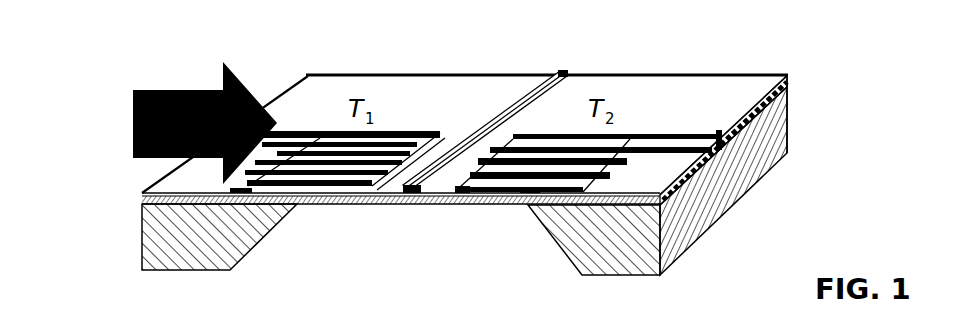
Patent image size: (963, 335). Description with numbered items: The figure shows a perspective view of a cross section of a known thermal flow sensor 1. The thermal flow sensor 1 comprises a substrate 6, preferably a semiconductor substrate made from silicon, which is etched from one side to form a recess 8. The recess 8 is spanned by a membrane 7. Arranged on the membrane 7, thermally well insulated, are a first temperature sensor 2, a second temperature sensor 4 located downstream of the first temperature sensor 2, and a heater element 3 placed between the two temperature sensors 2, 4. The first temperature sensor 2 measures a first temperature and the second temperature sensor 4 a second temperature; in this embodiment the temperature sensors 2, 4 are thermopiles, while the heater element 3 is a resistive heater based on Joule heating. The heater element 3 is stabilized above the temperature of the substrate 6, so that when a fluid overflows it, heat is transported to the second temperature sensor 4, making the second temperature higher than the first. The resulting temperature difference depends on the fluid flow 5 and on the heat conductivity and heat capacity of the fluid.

The thermal flow sensor 1 is at (803, 64).
The first temperature sensor 2 is at (325, 184).
The heater element 3 is at (403, 189).
The second temperature sensor 4 is at (622, 170).
The fluid flow 5 is at (160, 91).
The substrate 6 is at (162, 241).
The membrane 7 is at (452, 133).
The recess 8 is at (457, 216).